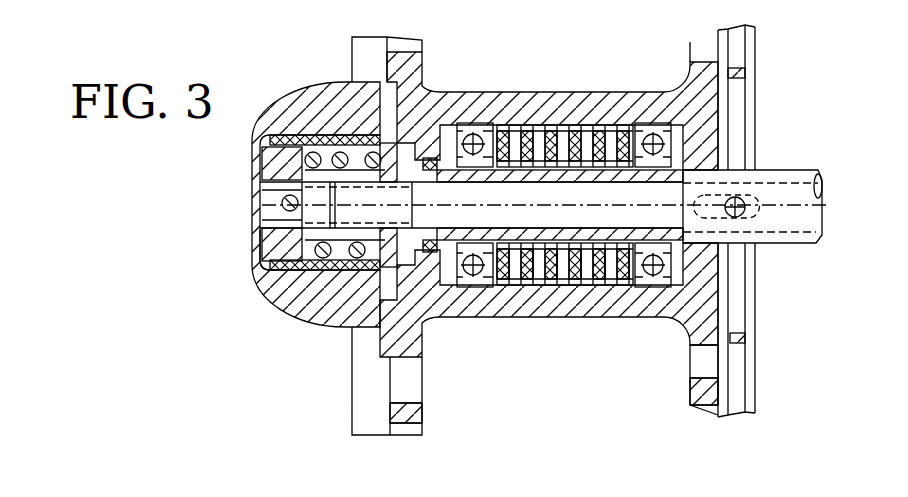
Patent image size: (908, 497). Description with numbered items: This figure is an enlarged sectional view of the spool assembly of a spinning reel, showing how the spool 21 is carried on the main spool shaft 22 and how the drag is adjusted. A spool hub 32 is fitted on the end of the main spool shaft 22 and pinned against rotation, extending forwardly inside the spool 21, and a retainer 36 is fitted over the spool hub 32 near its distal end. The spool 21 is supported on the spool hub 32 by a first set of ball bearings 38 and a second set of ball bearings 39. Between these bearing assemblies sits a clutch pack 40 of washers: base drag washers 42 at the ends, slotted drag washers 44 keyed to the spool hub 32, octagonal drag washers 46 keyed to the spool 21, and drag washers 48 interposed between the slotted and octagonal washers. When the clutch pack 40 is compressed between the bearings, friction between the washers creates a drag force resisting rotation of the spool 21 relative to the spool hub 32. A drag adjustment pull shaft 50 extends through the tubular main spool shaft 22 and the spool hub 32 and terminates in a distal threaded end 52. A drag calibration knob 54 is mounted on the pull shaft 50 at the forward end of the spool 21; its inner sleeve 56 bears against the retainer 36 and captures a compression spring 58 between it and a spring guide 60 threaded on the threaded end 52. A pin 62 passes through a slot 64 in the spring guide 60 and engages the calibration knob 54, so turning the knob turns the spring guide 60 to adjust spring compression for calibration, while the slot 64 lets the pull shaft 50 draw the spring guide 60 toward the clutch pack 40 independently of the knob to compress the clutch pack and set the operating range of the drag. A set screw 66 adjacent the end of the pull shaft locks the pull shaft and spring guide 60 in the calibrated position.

The spool 21 is at (421, 68).
The main spool shaft 22 is at (797, 168).
The spool hub 32 is at (736, 130).
The retainer 36 is at (433, 140).
The first set of ball bearings 38 is at (641, 130).
The second set of ball bearings 39 is at (470, 130).
The clutch pack 40 is at (563, 127).
The base drag washers 42 is at (500, 277).
The slotted drag washers 44 is at (567, 280).
The octagonal drag washers 46 is at (613, 280).
The drag washers 48 is at (520, 283).
The drag adjustment pull shaft 50 is at (443, 215).
The distal threaded end 52 is at (297, 305).
The drag calibration knob 54 is at (340, 315).
The inner sleeve 56 is at (318, 137).
The compression spring 58 is at (337, 140).
The spring guide 60 is at (262, 160).
The pin 62 is at (265, 207).
The slot 64 is at (283, 232).
The set screw 66 is at (272, 282).